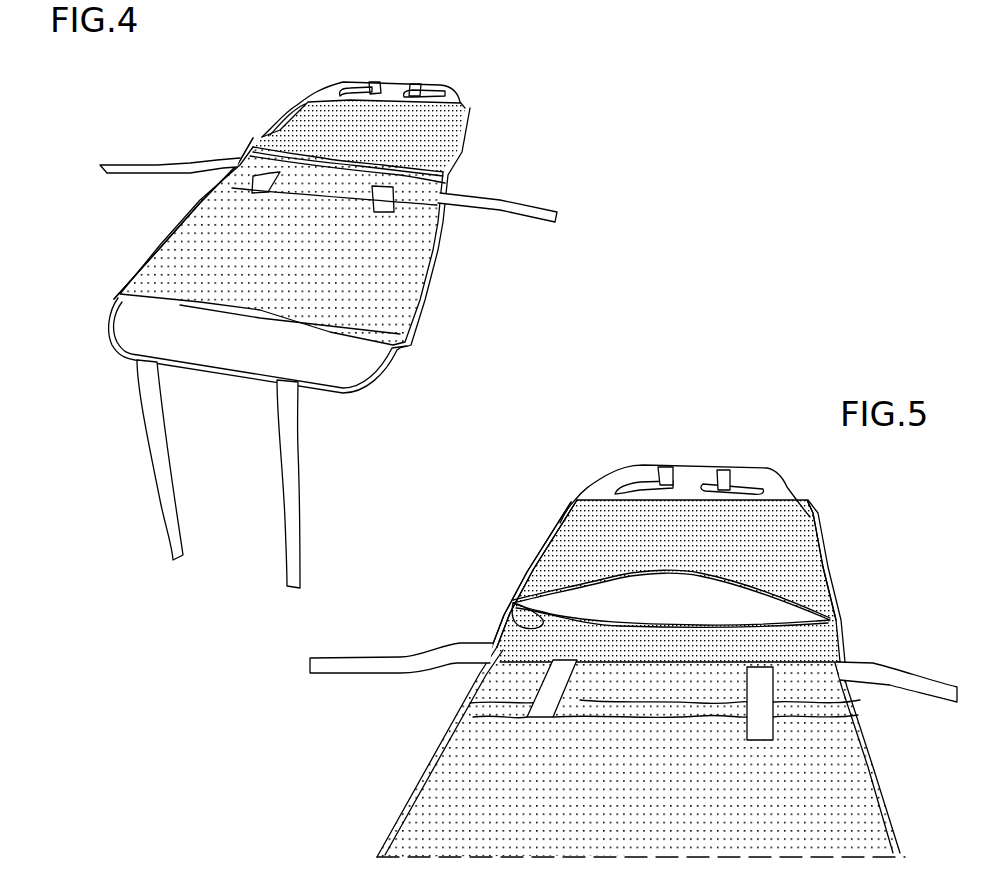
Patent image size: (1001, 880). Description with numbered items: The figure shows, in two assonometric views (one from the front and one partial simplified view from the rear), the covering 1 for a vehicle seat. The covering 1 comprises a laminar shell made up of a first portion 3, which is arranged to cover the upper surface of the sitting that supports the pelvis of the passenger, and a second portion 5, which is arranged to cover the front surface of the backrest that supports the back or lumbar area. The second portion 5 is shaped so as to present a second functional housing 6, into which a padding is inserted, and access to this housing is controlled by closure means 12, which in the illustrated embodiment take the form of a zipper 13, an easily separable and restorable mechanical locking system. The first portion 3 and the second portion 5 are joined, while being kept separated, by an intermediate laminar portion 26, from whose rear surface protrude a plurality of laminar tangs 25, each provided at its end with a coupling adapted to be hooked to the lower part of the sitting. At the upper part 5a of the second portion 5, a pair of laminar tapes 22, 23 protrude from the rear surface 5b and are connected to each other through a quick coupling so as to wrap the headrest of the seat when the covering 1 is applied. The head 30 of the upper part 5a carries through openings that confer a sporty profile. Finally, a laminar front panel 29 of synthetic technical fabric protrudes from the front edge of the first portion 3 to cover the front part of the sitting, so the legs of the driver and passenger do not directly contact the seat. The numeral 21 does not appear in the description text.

In FIG. 4, the covering 1 is at (604, 93).
In FIG. 4, the first portion 3 is at (397, 300).
In FIG. 5, the first portion 3 is at (656, 824).
In FIG. 4, the second portion 5 is at (312, 108).
In FIG. 5, the second portion 5 is at (782, 580).
In FIG. 5, the upper part of the second portion 5a is at (565, 488).
In FIG. 5, the rear surface of the second portion 5b is at (795, 545).
In FIG. 4, the second functional housing 6 is at (392, 167).
In FIG. 5, the second functional housing 6 is at (727, 605).
In FIG. 4, the closure means 12 is at (250, 122).
In FIG. 5, the closure means 12 is at (527, 575).
In FIG. 4, the zipper 13 is at (433, 187).
In FIG. 5, the zipper 13 is at (515, 616).
In FIG. 4, the fastening strap arrangement 21 is at (462, 78).
In FIG. 4, the laminar tape 22 is at (372, 85).
In FIG. 5, the laminar tape 22 is at (666, 470).
In FIG. 4, the laminar tape 23 is at (418, 88).
In FIG. 5, the laminar tape 23 is at (722, 478).
In FIG. 4, the laminar tangs 25 is at (108, 166).
In FIG. 5, the laminar tangs 25 is at (915, 680).
In FIG. 4, the intermediate laminar portion 26 is at (246, 155).
In FIG. 5, the intermediate laminar portion 26 is at (812, 698).
In FIG. 4, the laminar front panel 29 is at (254, 360).
In FIG. 4, the head 30 is at (396, 90).
In FIG. 5, the head 30 is at (772, 470).